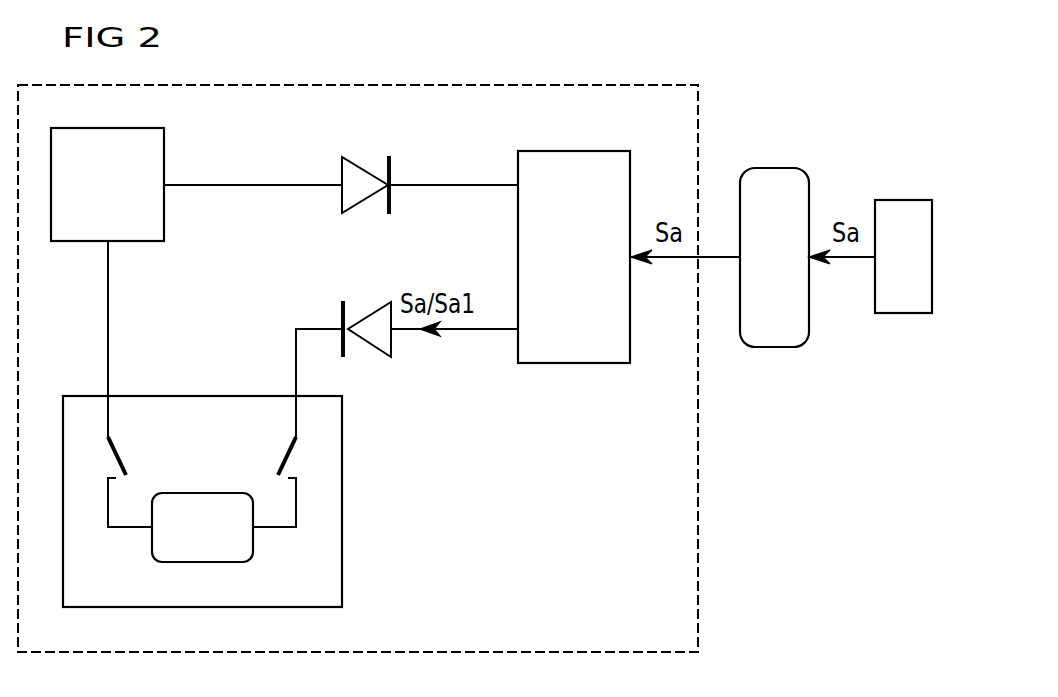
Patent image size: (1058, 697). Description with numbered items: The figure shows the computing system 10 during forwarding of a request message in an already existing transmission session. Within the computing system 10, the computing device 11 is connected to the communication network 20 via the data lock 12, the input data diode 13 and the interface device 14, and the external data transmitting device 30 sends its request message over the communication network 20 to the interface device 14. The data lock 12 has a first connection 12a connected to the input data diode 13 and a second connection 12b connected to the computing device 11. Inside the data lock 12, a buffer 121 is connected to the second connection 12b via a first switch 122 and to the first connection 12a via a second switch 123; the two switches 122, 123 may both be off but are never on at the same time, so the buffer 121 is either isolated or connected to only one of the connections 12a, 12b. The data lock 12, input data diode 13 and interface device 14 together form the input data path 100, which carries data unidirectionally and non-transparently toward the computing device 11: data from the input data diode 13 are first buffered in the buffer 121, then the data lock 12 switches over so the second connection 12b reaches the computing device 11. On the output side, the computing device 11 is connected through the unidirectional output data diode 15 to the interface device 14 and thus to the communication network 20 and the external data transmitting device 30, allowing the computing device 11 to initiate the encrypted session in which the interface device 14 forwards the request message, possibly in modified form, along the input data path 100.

The computing system 10 is at (698, 507).
The computing device 11 is at (122, 200).
The data lock 12 is at (342, 500).
The first connection 12a is at (296, 395).
The second connection 12b is at (108, 395).
The input data diode 13 is at (374, 311).
The interface device 14 is at (590, 273).
The output data diode 15 is at (362, 171).
The communication network 20 is at (792, 273).
The external data transmitting device 30 is at (918, 273).
The input data path 100 is at (436, 347).
The buffer 121 is at (226, 545).
The first switch 122 is at (120, 457).
The second switch 123 is at (284, 457).